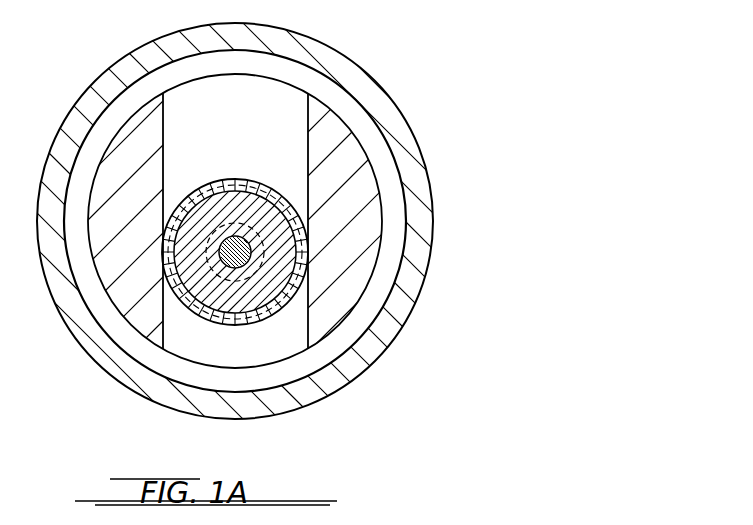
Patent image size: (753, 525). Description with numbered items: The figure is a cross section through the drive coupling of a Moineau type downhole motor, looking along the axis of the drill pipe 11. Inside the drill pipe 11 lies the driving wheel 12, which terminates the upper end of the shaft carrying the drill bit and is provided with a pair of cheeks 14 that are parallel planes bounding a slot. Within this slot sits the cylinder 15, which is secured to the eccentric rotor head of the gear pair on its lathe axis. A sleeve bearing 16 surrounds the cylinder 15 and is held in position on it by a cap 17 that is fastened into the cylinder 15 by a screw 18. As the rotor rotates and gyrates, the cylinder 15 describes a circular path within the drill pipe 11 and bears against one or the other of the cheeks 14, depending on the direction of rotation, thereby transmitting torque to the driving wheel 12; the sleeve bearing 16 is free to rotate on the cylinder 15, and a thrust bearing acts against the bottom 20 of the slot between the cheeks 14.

The drill pipe 11 is at (357, 70).
The driving wheel 12 is at (360, 172).
The cheek 14 is at (165, 128).
The cylinder 15 is at (270, 228).
The sleeve bearing 16 is at (282, 308).
The cap 17 is at (250, 257).
The screw 18 is at (255, 270).
The bottom of the slot 20 is at (272, 350).